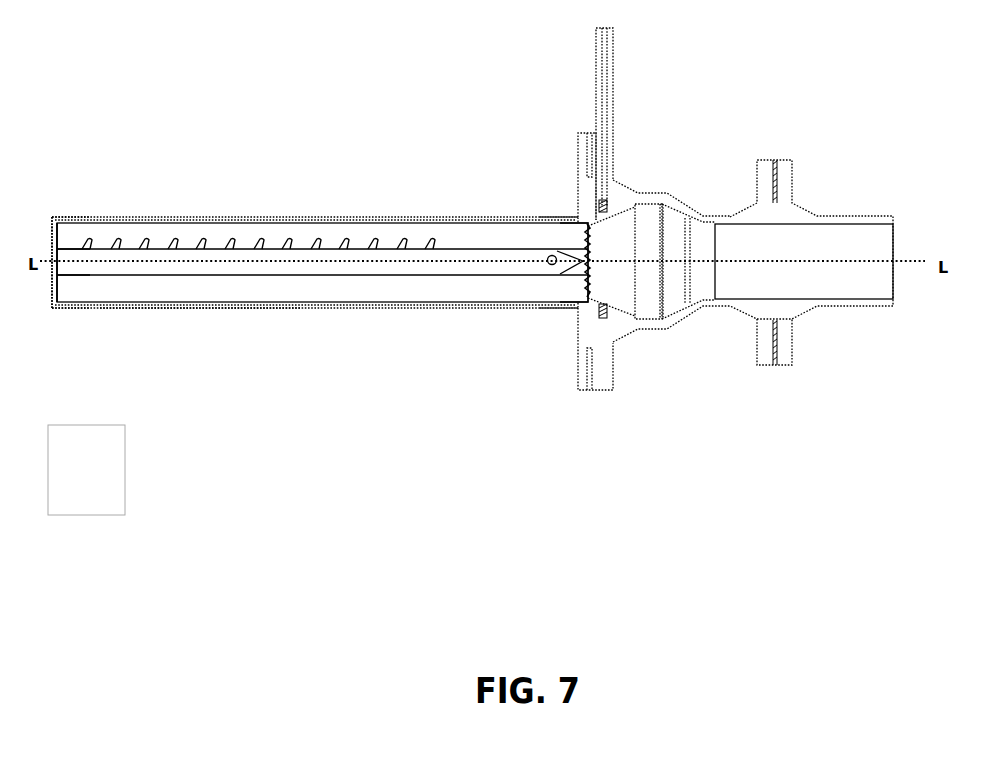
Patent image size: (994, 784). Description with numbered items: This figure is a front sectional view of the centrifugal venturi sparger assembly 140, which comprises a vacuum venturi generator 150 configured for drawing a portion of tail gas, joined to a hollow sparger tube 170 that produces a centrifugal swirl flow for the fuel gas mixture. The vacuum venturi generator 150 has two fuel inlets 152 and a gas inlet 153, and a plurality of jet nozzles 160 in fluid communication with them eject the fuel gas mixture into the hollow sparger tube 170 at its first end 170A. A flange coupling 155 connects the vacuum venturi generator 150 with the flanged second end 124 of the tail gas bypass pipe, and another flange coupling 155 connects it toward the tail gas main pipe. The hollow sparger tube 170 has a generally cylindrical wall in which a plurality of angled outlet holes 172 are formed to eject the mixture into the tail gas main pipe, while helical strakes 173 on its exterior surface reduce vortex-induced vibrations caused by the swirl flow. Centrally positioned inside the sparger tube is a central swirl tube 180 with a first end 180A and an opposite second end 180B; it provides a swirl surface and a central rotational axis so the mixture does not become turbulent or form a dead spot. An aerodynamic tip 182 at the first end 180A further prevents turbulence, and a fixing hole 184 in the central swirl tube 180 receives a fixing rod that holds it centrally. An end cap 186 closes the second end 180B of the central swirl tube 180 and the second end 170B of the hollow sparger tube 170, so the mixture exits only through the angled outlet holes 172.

The centrifugal venturi sparger assembly 140 is at (391, 66).
The hollow sparger tube 170 is at (400, 219).
The first end 170A is at (577, 214).
The second end 170B is at (67, 216).
The helical strakes 173 is at (123, 307).
The end cap 186 is at (52, 278).
The central swirl tube 180 is at (373, 270).
The first end 180A is at (569, 253).
The second end 180B is at (58, 249).
The angled outlet holes 172 is at (262, 241).
The aerodynamic tip 182 is at (586, 232).
The fixing hole 184 is at (549, 268).
The fuel inlets 152 is at (596, 134).
The gas inlet 153 is at (607, 83).
The flange coupling 155 is at (583, 378).
The jet nozzles 160 is at (593, 237).
The vacuum venturi generator 150 is at (670, 198).
The second end 124 is at (785, 177).